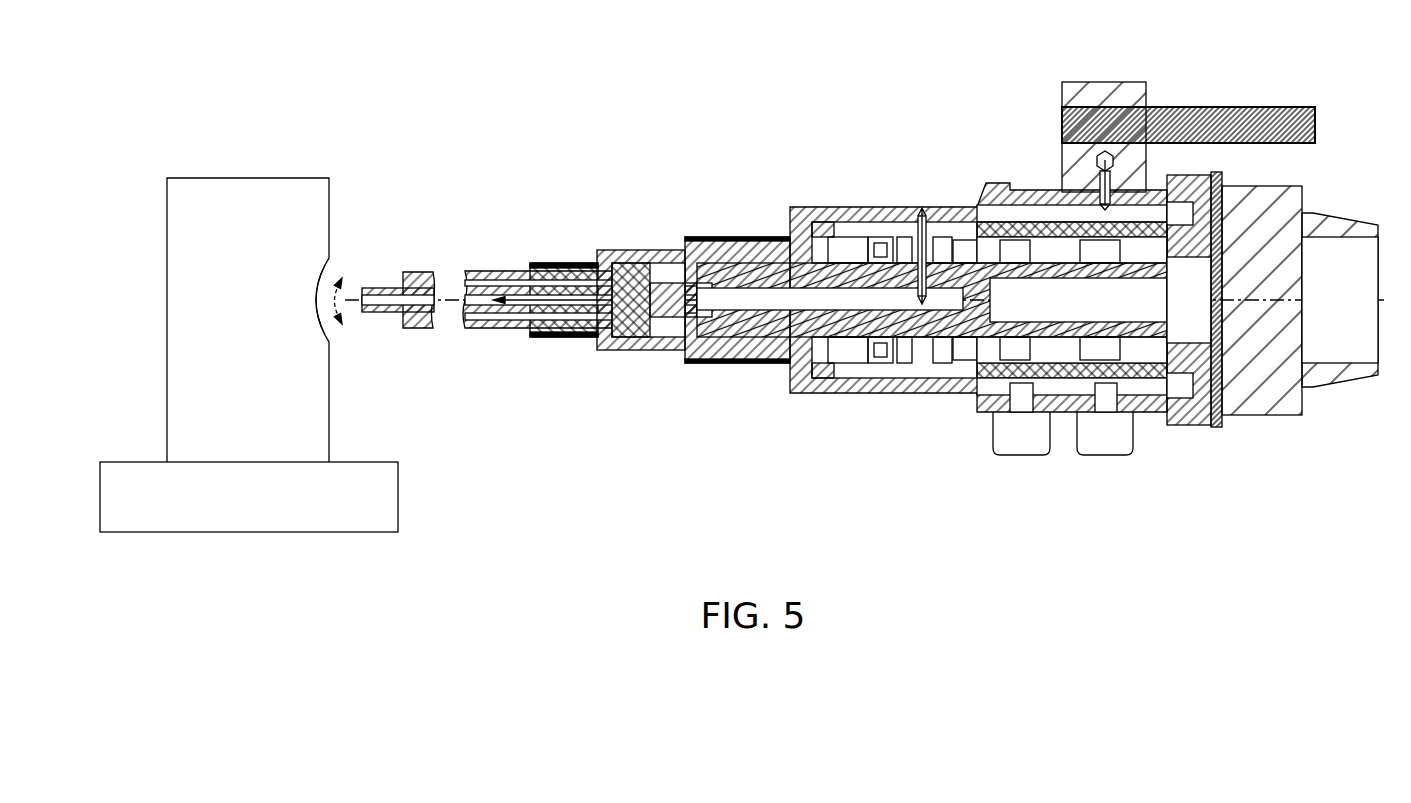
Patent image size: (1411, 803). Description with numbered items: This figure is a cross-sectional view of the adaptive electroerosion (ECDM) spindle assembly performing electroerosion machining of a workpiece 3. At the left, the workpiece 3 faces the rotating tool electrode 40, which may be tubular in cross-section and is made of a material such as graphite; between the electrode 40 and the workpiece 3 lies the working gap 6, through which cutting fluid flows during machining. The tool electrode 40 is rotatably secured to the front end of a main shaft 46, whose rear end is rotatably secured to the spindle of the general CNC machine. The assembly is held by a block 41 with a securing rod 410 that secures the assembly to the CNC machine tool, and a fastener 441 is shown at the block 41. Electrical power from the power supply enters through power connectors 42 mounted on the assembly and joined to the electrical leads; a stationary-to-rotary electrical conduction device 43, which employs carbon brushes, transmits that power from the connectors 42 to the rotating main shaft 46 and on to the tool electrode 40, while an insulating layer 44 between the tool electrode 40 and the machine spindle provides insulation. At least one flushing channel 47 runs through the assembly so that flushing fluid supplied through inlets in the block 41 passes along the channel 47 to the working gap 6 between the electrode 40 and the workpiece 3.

The workpiece 3 is at (298, 128).
The working gap 6 is at (323, 292).
The tool electrode 40 is at (395, 308).
The block 41 is at (1108, 82).
The securing rod 410 is at (1215, 107).
The fixing screw 441 is at (1090, 163).
The power connectors 42 is at (1022, 455).
The stationary-to-rotary electrical conduction device 43 is at (1107, 385).
The insulating layer 44 is at (1217, 427).
The main shaft 46 is at (742, 352).
The flushing channel 47 is at (740, 290).